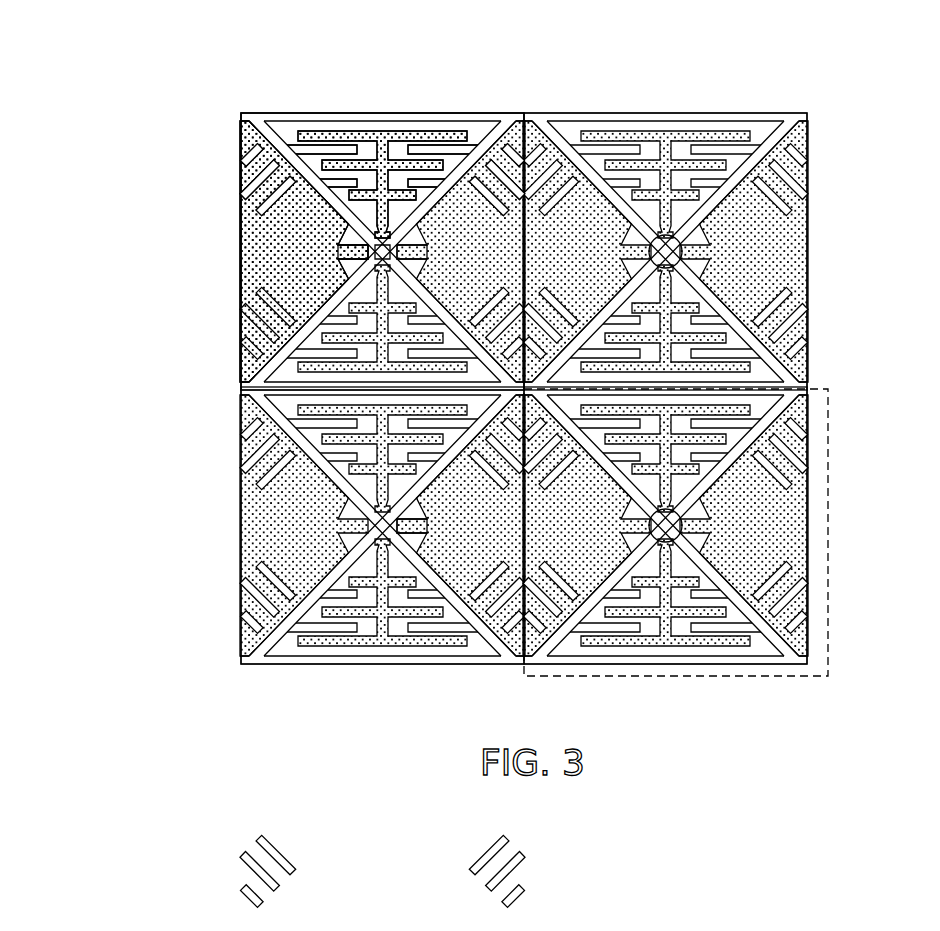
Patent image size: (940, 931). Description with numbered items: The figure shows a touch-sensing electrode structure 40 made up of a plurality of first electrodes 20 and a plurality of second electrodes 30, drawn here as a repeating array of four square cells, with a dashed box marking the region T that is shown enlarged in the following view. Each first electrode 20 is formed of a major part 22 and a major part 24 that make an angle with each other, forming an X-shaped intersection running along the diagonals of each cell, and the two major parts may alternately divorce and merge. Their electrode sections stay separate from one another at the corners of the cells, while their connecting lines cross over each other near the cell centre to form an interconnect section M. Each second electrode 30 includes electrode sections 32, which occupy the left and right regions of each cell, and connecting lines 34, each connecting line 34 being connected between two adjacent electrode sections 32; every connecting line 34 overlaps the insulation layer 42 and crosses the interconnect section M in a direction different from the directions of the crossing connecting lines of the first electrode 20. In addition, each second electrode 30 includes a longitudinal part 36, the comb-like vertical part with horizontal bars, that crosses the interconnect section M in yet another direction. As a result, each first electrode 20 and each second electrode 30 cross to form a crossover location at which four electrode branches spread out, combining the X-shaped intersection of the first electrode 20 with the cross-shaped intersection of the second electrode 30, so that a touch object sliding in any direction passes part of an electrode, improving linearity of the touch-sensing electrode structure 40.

The touch-sensing electrode structure 40 is at (131, 88).
The first electrode 20 is at (254, 112).
The second electrode 30 is at (240, 247).
The electrode section 32 is at (245, 271).
The major part 22 is at (243, 151).
The major part 24 is at (481, 135).
The connecting line 34 is at (409, 247).
The longitudinal part 36 is at (381, 150).
The insulation layer 42 is at (401, 521).
The interconnect section M is at (672, 268).
The partial enlarged view region T is at (832, 457).